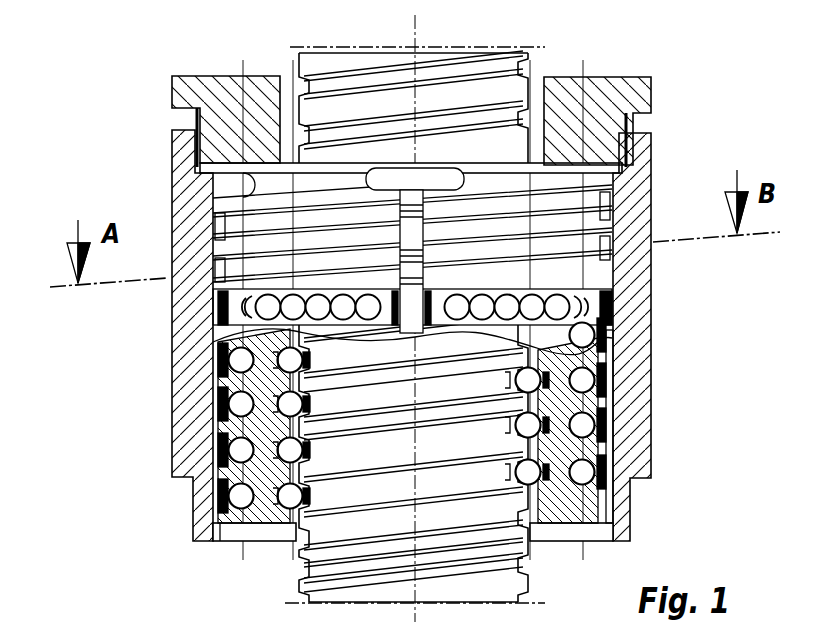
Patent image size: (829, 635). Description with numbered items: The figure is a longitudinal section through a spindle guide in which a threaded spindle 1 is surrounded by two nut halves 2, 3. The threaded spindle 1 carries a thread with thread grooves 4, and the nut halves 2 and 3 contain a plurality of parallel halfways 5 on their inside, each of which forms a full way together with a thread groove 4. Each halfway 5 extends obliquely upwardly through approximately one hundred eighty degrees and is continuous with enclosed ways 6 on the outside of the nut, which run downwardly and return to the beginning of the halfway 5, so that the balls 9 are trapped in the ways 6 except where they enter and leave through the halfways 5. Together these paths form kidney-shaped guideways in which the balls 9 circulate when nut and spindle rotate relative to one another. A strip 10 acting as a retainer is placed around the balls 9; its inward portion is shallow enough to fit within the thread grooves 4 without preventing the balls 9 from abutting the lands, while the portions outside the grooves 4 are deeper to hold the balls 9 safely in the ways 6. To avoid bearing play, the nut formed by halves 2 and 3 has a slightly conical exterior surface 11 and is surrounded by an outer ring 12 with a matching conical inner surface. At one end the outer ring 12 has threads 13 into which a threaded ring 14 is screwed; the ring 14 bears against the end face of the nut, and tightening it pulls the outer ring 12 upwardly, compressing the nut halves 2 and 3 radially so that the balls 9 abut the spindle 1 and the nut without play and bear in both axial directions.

The threaded spindle 1 is at (313, 378).
The nut half 2 is at (222, 427).
The nut half 3 is at (607, 448).
The thread grooves 4 is at (307, 583).
The halfways 5 is at (550, 383).
The enclosed ways 6 is at (603, 417).
The balls 9 is at (217, 456).
The strip 10 is at (217, 497).
The conical exterior surface 11 is at (640, 270).
The outer ring 12 is at (187, 326).
The threads 13 is at (205, 168).
The threaded ring 14 is at (207, 97).